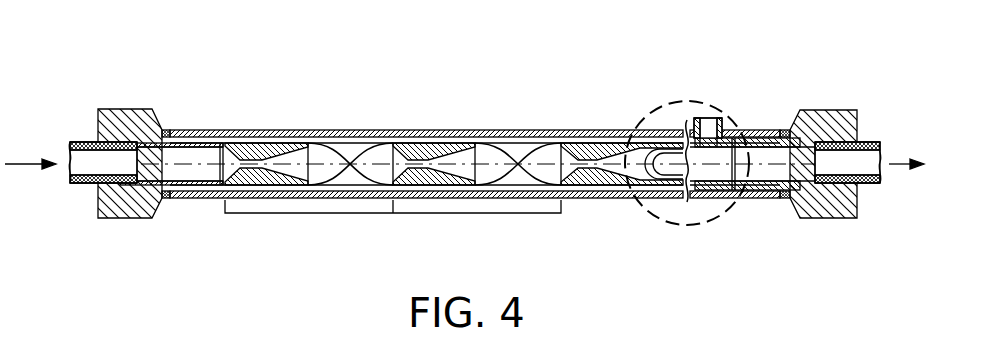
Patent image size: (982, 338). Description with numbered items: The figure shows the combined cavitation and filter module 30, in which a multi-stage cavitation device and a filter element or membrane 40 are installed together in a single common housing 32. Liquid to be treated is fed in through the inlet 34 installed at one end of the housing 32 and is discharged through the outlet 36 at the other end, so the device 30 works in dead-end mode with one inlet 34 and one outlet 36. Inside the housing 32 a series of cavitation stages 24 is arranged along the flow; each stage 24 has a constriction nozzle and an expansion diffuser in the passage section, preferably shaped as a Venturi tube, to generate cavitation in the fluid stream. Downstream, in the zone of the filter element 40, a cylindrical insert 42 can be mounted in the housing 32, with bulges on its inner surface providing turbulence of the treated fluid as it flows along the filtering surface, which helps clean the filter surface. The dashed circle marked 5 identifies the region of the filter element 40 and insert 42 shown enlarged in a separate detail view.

The combined cavitation and filter module 30 is at (293, 70).
The housing 32 is at (425, 129).
The inlet 34 is at (131, 108).
The outlet 36 is at (813, 110).
The cavitation stage 24 is at (308, 214).
The filter element or membrane 40 is at (733, 131).
The cylindrical insert 42 is at (663, 131).
The detail view circle (FIG. 5) 5 is at (717, 217).